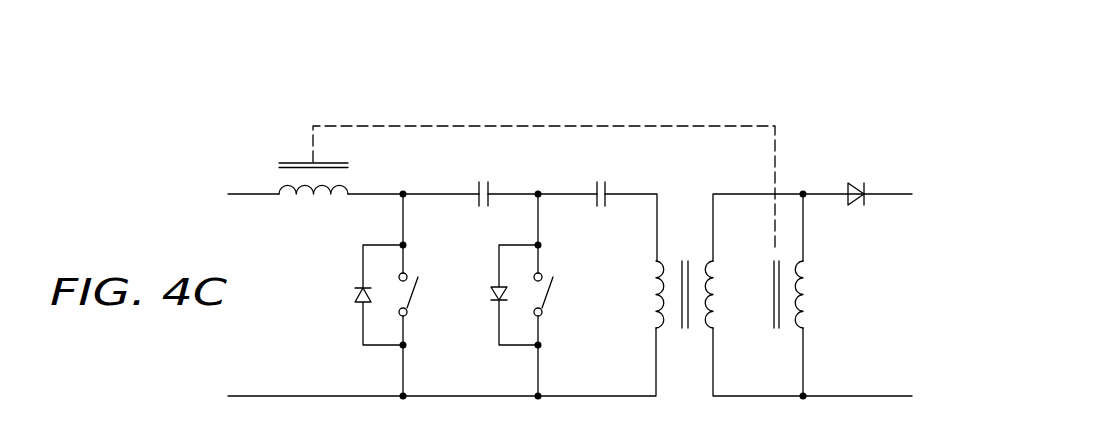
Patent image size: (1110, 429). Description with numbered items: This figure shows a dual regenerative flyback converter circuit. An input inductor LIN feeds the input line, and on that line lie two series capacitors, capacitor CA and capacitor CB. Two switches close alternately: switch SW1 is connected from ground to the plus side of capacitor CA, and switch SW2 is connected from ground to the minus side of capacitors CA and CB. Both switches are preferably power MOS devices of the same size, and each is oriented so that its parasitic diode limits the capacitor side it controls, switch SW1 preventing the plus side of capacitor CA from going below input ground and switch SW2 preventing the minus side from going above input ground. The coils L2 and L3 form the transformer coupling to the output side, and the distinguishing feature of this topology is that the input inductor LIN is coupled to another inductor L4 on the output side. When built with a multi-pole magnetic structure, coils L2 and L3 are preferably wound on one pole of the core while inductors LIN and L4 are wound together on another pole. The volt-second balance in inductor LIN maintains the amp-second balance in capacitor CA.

The input inductor LIN is at (313, 197).
The capacitor CA is at (481, 201).
The capacitor CB is at (600, 201).
The switch SW1 is at (406, 295).
The switch SW2 is at (542, 295).
The coil L2 is at (661, 294).
The coil L3 is at (720, 294).
The inductor L4 is at (801, 294).